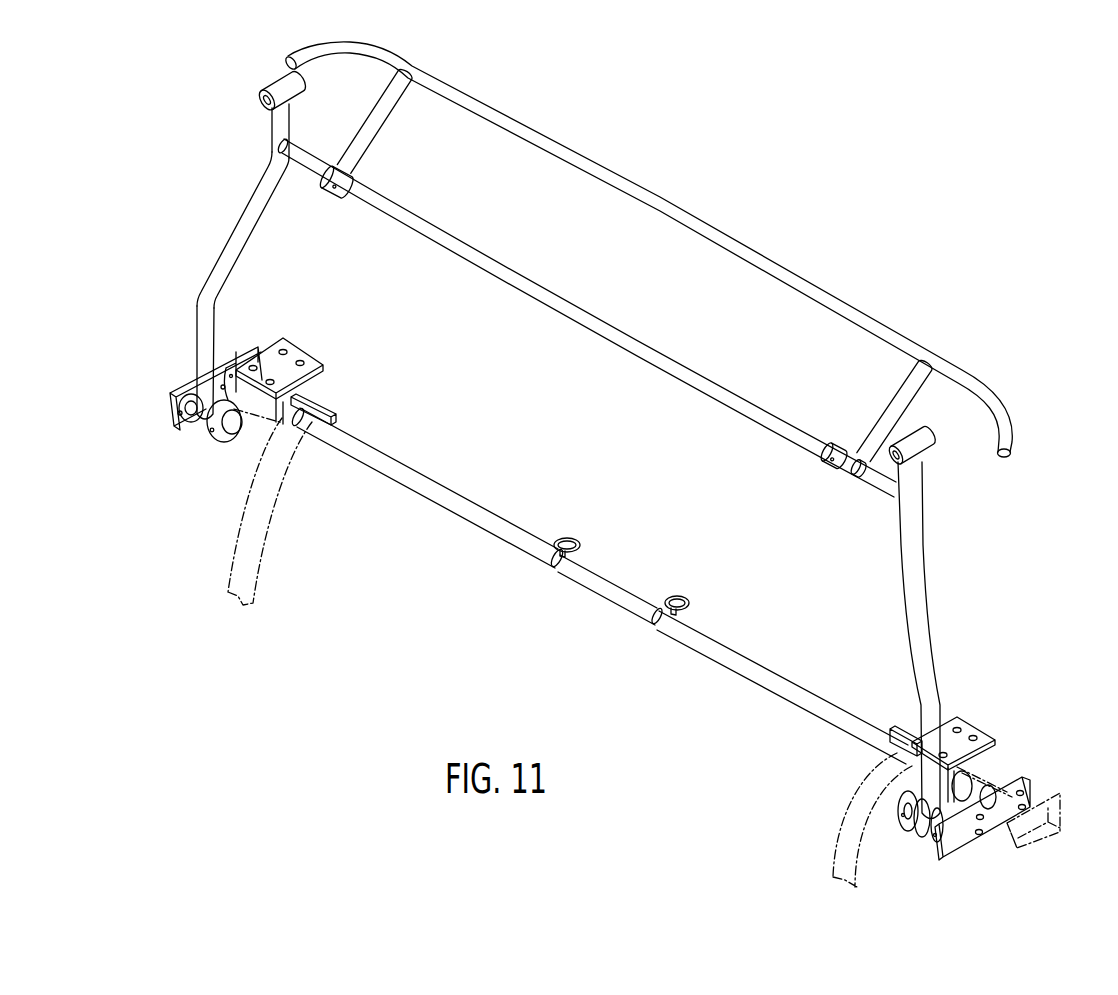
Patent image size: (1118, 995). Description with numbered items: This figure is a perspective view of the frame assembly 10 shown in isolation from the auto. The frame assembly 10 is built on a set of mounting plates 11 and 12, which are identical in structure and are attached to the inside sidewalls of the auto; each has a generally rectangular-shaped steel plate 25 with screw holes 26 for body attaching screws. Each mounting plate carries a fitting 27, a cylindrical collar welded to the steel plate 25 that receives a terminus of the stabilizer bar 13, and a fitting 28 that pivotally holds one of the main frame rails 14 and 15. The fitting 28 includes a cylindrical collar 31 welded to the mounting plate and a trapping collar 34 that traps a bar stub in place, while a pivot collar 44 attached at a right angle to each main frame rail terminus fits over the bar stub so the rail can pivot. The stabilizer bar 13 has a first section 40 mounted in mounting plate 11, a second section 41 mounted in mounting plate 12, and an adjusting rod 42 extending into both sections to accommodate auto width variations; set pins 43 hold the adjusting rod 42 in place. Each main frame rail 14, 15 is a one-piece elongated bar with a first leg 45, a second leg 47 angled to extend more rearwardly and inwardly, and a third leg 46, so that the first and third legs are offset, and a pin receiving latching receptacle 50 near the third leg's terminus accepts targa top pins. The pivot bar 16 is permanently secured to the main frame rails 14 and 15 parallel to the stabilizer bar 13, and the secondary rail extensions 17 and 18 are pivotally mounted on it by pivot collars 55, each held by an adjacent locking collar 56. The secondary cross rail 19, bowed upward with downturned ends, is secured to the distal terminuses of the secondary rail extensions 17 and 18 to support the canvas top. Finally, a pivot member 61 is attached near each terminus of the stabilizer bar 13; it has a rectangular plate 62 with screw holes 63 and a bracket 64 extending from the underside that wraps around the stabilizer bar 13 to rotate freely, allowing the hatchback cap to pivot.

The frame assembly 10 is at (963, 190).
The mounting plate 11 is at (148, 376).
The mounting plate 12 is at (982, 854).
The stabilizer bar 13 is at (463, 534).
The main frame rail 14 is at (288, 222).
The main frame rail 15 is at (938, 528).
The pivot bar 16 is at (556, 298).
The secondary rail extension 17 is at (380, 120).
The secondary rail extension 18 is at (898, 392).
The secondary cross rail 19 is at (716, 228).
The steel plate 25 is at (1034, 781).
The screw holes 26 is at (1033, 812).
The fitting 27 is at (239, 350).
The fitting 28 is at (175, 429).
The collar 31 is at (183, 391).
The trapping collar 34 is at (221, 448).
The first section 40 is at (406, 462).
The second section 41 is at (753, 662).
The adjusting rod 42 is at (611, 604).
The set pins 43 is at (565, 537).
The pivot collar 44 is at (204, 432).
The first leg 45 is at (197, 315).
The third leg 46 is at (275, 120).
The second leg 47 is at (243, 224).
The pin receiving latching receptacle 50 is at (259, 99).
The pivot collar 55 is at (857, 481).
The locking collar 56 is at (833, 470).
The pivot member 61 is at (966, 712).
The plate 62 is at (987, 728).
The screw holes 63 is at (289, 351).
The bracket 64 is at (294, 391).